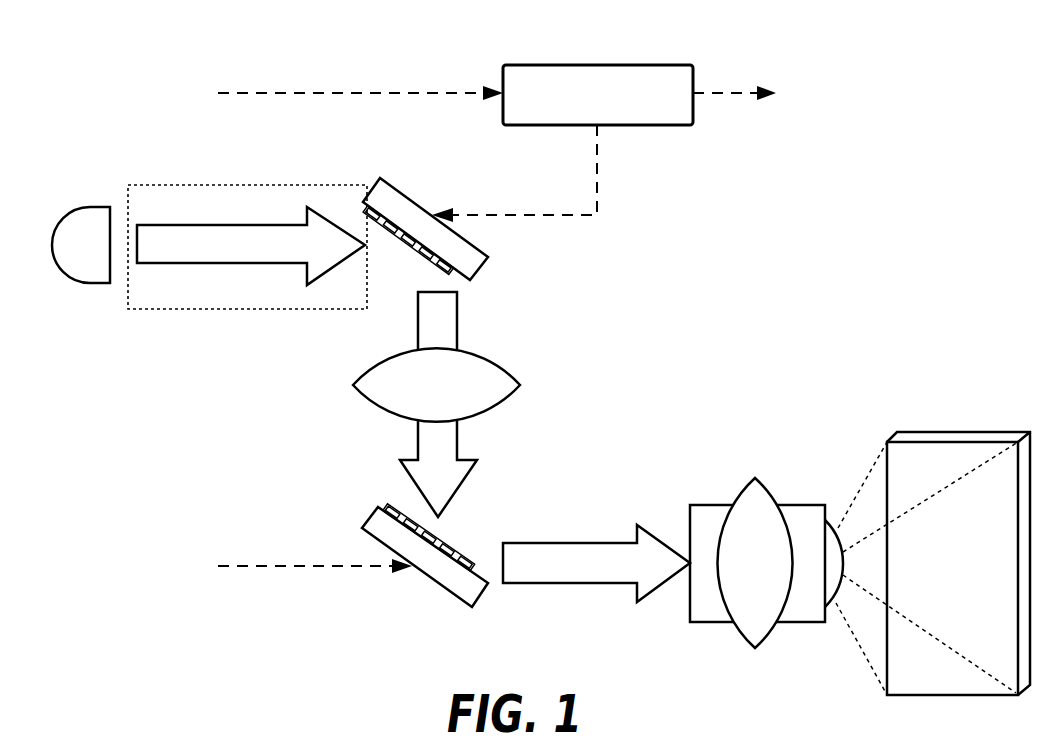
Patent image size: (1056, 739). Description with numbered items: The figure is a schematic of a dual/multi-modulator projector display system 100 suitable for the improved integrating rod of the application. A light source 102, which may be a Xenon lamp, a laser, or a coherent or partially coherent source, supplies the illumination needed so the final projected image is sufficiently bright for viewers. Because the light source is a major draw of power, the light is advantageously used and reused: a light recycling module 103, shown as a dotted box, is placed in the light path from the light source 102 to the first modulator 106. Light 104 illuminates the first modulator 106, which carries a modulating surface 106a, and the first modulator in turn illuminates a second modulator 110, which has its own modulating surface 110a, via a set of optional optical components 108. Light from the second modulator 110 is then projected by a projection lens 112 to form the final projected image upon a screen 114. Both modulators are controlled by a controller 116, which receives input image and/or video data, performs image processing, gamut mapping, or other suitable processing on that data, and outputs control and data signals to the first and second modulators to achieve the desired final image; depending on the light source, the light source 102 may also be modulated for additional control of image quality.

The dual/multi-modulator projector display system 100 is at (106, 56).
The light source 102 is at (100, 205).
The light recycling module 103 is at (218, 185).
The light 104 is at (218, 225).
The first modulator 106 is at (385, 214).
The micromirror array of first modulator 106a is at (366, 211).
The optional optical components 108 is at (471, 347).
The second modulator 110 is at (403, 545).
The micromirror array of second modulator 110a is at (400, 508).
The projection lens 112 is at (750, 488).
The screen 114 is at (932, 432).
The controller 116 is at (573, 65).